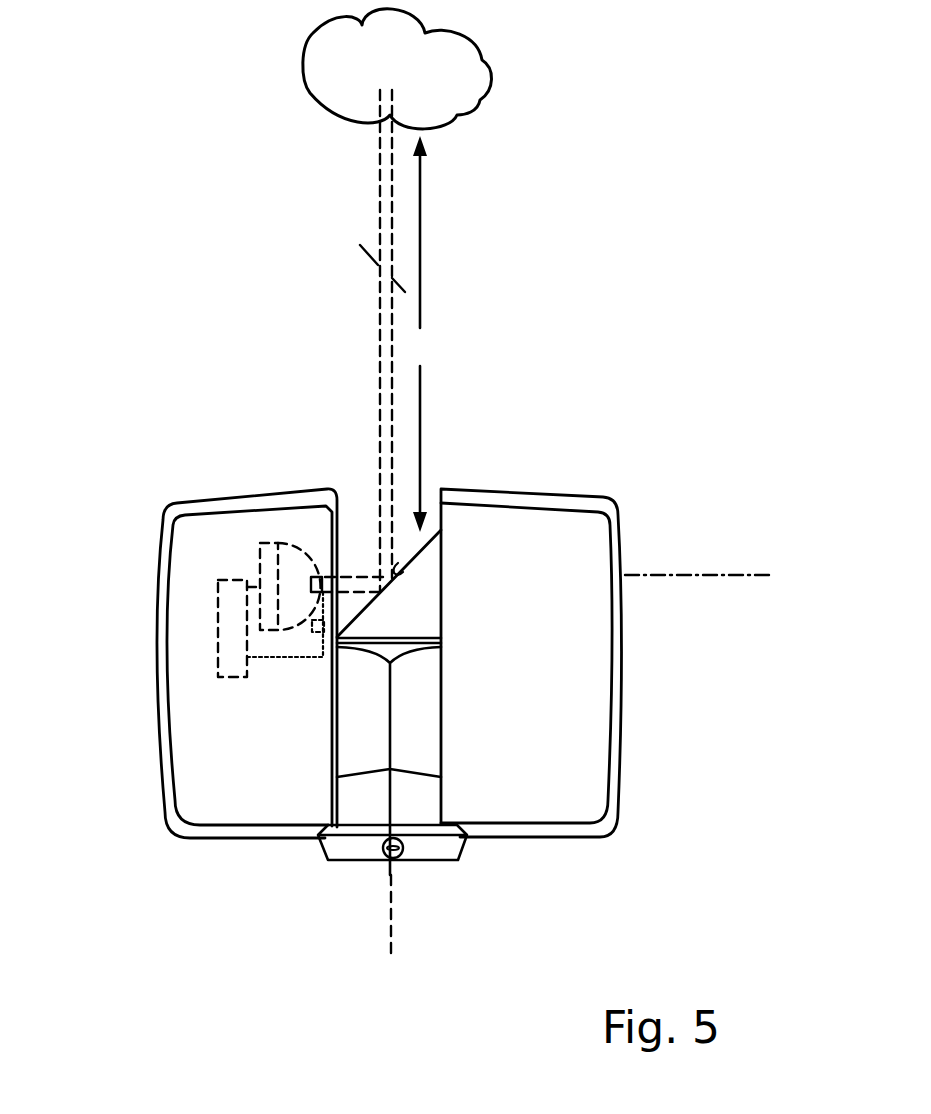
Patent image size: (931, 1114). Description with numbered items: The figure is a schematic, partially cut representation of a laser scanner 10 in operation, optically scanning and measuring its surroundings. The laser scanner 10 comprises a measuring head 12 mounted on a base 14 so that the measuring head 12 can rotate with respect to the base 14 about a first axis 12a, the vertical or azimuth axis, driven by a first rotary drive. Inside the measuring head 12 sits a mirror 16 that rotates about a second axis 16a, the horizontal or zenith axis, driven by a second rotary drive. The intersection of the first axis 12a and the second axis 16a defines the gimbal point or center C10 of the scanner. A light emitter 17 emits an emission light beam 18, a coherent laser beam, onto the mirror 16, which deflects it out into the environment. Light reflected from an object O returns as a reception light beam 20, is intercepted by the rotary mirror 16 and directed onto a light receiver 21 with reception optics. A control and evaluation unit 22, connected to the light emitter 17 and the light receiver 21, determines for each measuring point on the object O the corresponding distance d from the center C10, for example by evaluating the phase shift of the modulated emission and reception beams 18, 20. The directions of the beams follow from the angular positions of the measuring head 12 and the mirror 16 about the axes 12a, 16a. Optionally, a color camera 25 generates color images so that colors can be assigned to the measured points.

The laser scanner 10 is at (213, 222).
The measuring head 12 is at (618, 788).
The first axis 12a is at (392, 908).
The base 14 is at (348, 861).
The mirror 16 is at (417, 627).
The second axis 16a is at (737, 575).
The light emitter 17 is at (317, 627).
The emission light beam 18 is at (393, 246).
The reception light beam 20 is at (380, 288).
The light receiver 21 is at (267, 568).
The control and evaluation unit 22 is at (227, 588).
The color camera 25 is at (322, 575).
The center C10 is at (400, 567).
The object O is at (487, 60).
The distance d is at (420, 334).